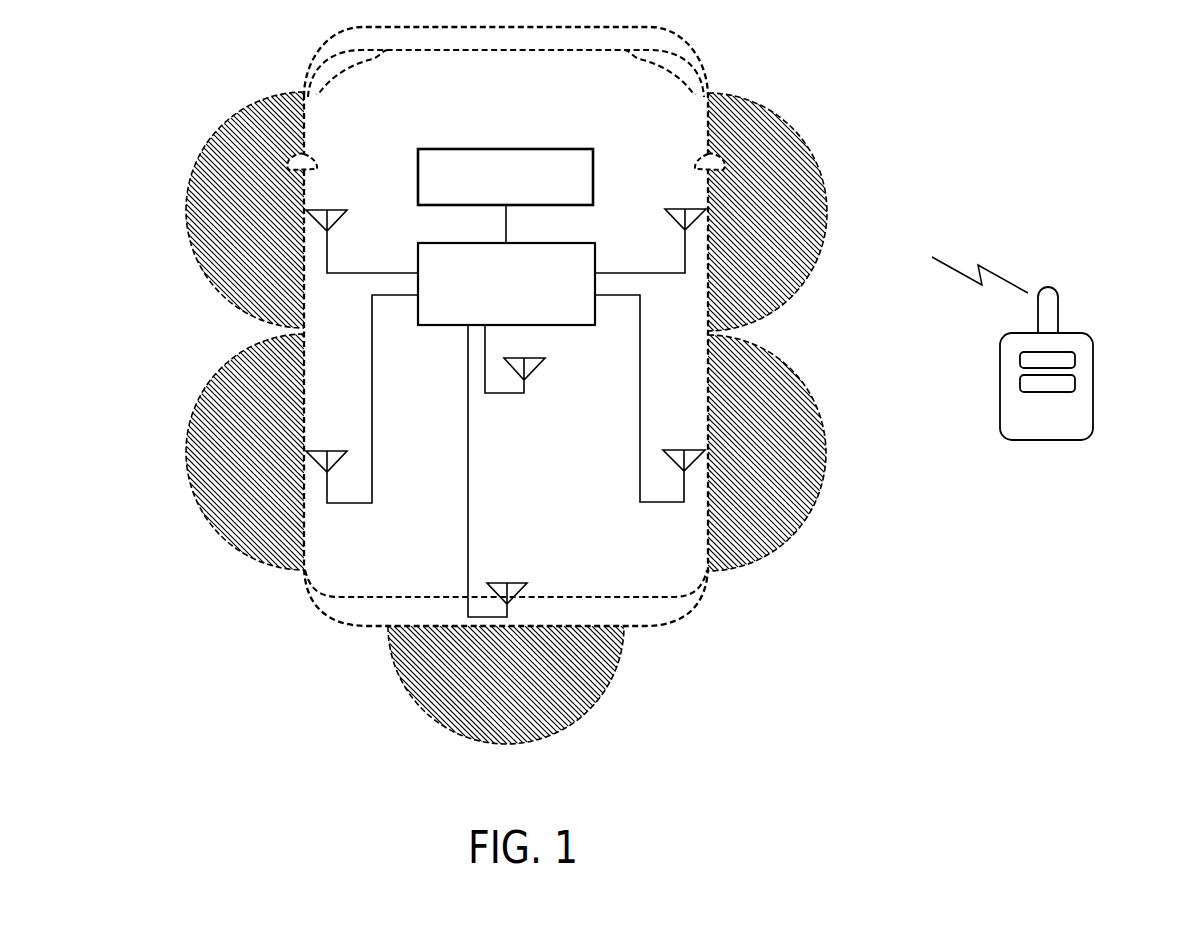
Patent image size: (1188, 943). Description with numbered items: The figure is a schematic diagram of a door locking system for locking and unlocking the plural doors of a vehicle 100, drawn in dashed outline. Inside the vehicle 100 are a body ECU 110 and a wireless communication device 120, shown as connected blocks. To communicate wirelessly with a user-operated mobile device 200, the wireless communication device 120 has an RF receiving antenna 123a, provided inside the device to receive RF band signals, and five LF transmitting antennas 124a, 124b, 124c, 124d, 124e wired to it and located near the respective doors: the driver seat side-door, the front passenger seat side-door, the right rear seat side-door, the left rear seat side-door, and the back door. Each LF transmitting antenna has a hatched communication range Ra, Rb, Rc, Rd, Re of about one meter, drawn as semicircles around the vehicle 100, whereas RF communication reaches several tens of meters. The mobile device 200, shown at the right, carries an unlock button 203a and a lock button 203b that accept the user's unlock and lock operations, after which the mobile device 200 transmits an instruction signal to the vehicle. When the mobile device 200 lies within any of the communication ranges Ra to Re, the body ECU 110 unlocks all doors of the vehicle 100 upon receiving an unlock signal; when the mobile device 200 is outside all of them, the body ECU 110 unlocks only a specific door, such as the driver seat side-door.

The vehicle 100 is at (705, 58).
The body ECU 110 is at (553, 150).
The wireless communication device 120 is at (597, 250).
The RF receiving antenna 123a is at (534, 373).
The LF transmitting antenna 124a is at (683, 208).
The LF transmitting antenna 124b is at (330, 208).
The LF transmitting antenna 124c is at (683, 448).
The LF transmitting antenna 124d is at (328, 449).
The LF transmitting antenna 124e is at (497, 580).
The mobile device 200 is at (1110, 328).
The unlock button 203a is at (1075, 360).
The lock button 203b is at (1075, 383).
The communication range Ra is at (797, 125).
The communication range Rb is at (223, 130).
The communication range Rc is at (795, 368).
The communication range Rd is at (222, 368).
The communication range Re is at (612, 678).